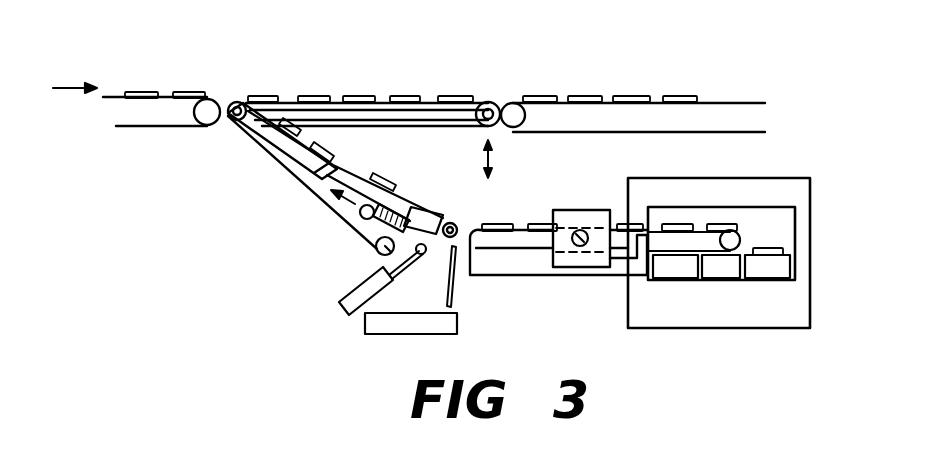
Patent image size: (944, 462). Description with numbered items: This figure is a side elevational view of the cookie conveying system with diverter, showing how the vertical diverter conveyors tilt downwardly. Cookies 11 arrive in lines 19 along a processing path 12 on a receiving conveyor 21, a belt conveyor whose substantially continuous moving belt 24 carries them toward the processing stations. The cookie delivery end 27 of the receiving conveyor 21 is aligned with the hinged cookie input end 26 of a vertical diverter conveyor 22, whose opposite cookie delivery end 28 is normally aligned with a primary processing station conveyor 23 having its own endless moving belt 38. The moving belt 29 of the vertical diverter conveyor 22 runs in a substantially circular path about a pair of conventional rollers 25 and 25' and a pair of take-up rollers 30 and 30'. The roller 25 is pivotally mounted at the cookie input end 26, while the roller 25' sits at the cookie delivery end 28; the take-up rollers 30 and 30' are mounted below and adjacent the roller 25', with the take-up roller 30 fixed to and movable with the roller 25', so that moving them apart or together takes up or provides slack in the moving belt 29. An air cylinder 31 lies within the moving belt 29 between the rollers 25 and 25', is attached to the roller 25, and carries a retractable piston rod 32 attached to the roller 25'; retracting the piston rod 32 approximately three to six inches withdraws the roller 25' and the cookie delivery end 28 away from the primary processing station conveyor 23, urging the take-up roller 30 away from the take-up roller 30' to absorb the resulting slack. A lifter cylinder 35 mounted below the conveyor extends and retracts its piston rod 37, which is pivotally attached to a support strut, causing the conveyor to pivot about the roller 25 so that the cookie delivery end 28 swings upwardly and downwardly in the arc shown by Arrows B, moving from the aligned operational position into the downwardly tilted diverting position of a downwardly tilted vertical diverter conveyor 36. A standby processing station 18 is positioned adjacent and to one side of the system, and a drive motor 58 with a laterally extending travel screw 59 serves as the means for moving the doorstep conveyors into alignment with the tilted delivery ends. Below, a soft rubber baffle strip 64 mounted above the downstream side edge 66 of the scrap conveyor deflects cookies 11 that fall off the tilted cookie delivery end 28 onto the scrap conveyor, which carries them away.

The cookies 11 is at (140, 92).
The processing paths 12 is at (75, 75).
The standby processing station 18 is at (695, 167).
The lines of cookies 19 is at (387, 83).
The receiving conveyor 21 is at (149, 135).
The vertical diverter conveyor 22 is at (340, 95).
The primary processing station conveyor 23 is at (613, 100).
The moving belt 24 is at (112, 98).
The roller 25 is at (214, 65).
The roller 25' is at (456, 165).
The cookie input end 26 is at (237, 100).
The cookie delivery end 27 is at (225, 98).
The cookie delivery end 28 is at (492, 102).
The moving belt 29 is at (290, 102).
The take-up roller 30 is at (323, 224).
The take-up roller 30' is at (343, 240).
The air cylinder 31 is at (253, 113).
The piston rod 32 is at (382, 168).
The lifter cylinder 35 is at (350, 313).
The downwardly tilted vertical diverter conveyor 36 is at (289, 211).
The piston rod 37 is at (400, 264).
The moving belt 38 is at (722, 102).
The drive motor 58 is at (565, 212).
The travel screw 59 is at (580, 247).
The baffle strip 64 is at (457, 283).
The downstream side edge 66 is at (462, 313).
The Arrows B is at (499, 159).